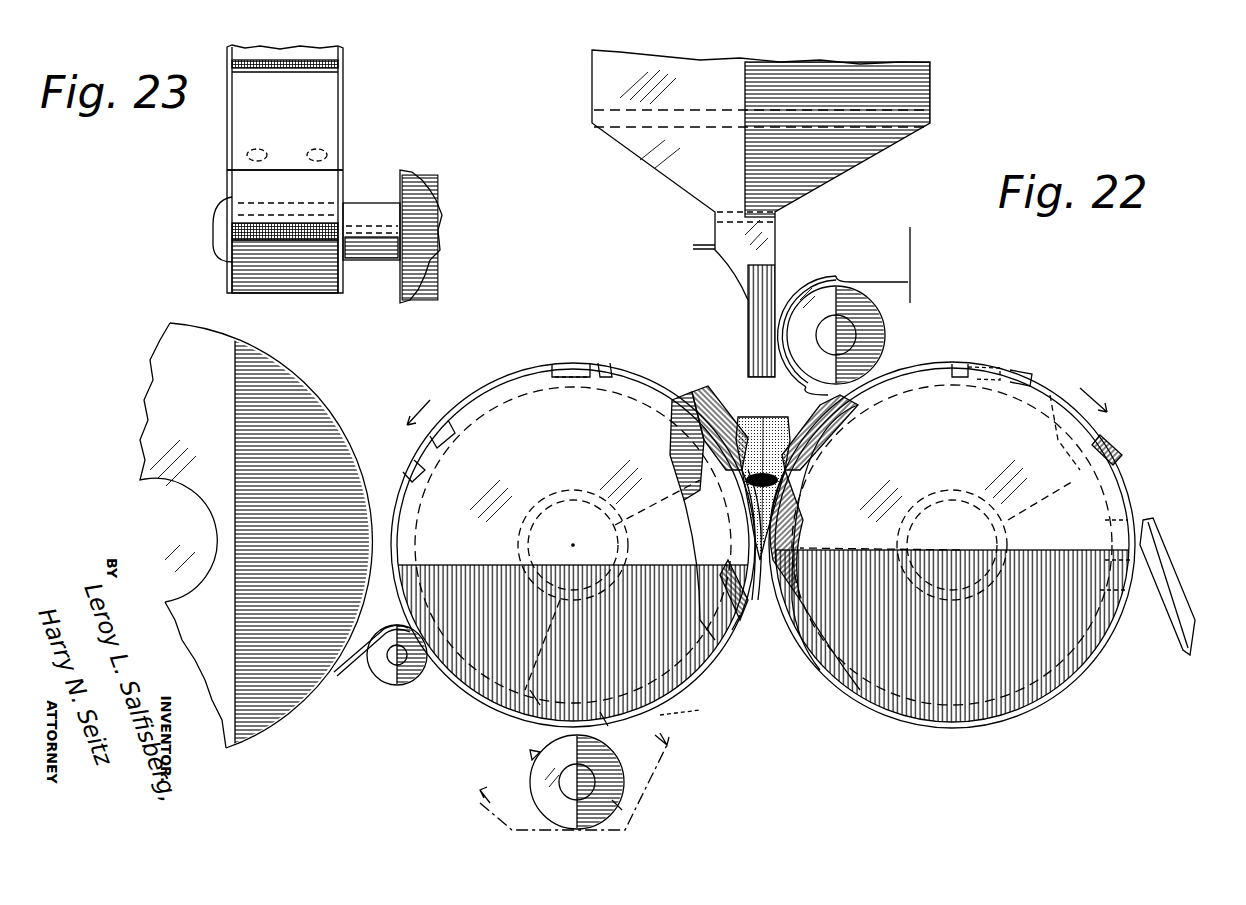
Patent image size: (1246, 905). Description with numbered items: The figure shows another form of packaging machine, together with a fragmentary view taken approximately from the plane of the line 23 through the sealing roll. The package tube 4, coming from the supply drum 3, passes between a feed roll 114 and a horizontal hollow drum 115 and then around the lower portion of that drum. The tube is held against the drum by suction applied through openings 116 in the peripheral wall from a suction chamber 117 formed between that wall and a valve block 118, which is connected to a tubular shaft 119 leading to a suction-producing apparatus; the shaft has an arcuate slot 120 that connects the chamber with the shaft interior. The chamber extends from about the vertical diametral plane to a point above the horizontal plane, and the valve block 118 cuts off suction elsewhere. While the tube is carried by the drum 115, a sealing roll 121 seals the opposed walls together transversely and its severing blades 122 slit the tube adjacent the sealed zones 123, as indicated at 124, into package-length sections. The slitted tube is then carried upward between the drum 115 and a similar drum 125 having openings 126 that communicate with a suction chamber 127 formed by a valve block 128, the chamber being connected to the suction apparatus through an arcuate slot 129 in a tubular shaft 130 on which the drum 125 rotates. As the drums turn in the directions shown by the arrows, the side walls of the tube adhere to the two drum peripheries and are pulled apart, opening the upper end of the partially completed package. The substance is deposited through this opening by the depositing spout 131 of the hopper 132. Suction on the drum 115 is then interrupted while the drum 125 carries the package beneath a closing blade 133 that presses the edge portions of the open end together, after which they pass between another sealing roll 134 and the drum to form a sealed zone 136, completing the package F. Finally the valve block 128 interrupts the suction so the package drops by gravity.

In FIG. 22, the supply drum 3 is at (300, 404).
In FIG. 23, the package tube 4 is at (232, 136).
In FIG. 22, the package tube 4 is at (368, 662).
In FIG. 22, the feed roll 114 is at (405, 676).
In FIG. 23, the horizontal hollow drum 115 is at (345, 133).
In FIG. 22, the horizontal hollow drum 115 is at (480, 378).
In FIG. 23, the openings 116 is at (328, 157).
In FIG. 22, the openings 116 is at (592, 372).
In FIG. 22, the suction chamber 117 is at (702, 410).
In FIG. 22, the valve block 118 is at (678, 396).
In FIG. 22, the tubular shaft 119 is at (556, 490).
In FIG. 22, the arcuate slot 120 is at (628, 532).
In FIG. 23, the sealing roll 121 is at (240, 271).
In FIG. 22, the sealing roll 121 is at (542, 775).
In FIG. 23, the severing blades 122 is at (250, 223).
In FIG. 22, the severing blades 122 is at (527, 758).
In FIG. 23, the sealed zones 123 is at (342, 62).
In FIG. 22, the sealed zones 123 is at (980, 366).
In FIG. 23, the slit 124 is at (318, 74).
In FIG. 22, the slit 124 is at (690, 722).
In FIG. 22, the drum 125 is at (1078, 684).
In FIG. 22, the openings 126 is at (818, 440).
In FIG. 22, the suction chamber 127 is at (796, 658).
In FIG. 22, the valve block 128 is at (1053, 395).
In FIG. 22, the arcuate slot 129 is at (1008, 516).
In FIG. 22, the tubular shaft 130 is at (965, 498).
In FIG. 22, the depositing spout 131 is at (745, 293).
In FIG. 22, the hopper 132 is at (668, 170).
In FIG. 22, the closing blade 133 is at (805, 389).
In FIG. 22, the sealing roll 134 is at (862, 334).
In FIG. 22, the sealed zone 136 is at (968, 363).
In FIG. 22, the package F is at (952, 364).
In FIG. 22, the line 23— 23 is at (569, 781).